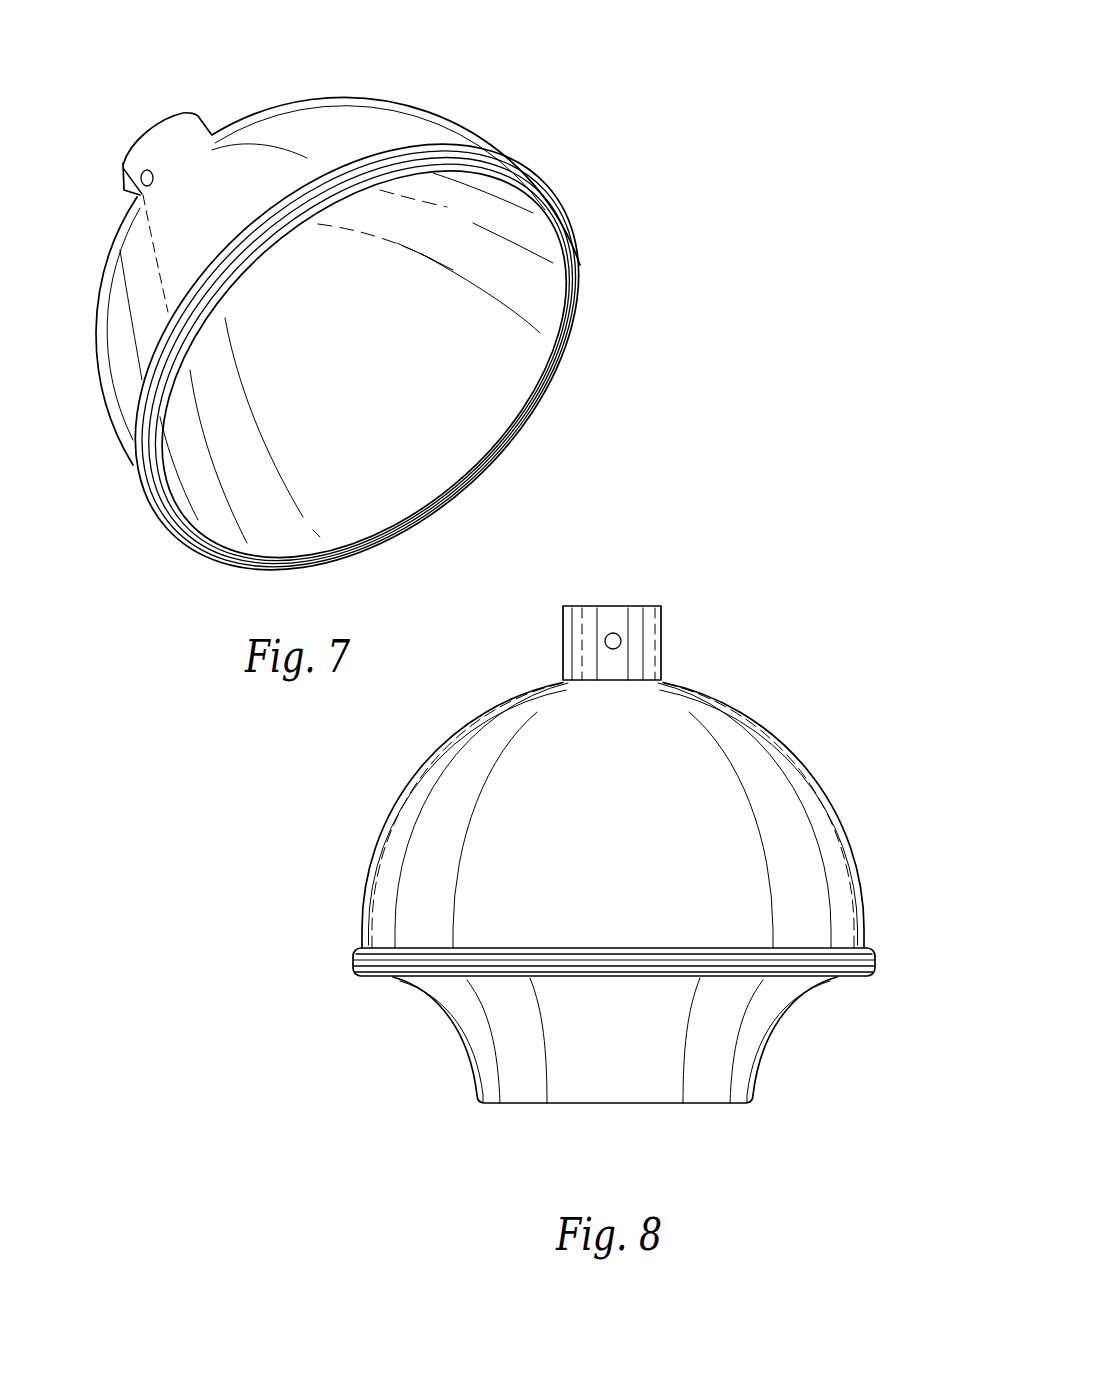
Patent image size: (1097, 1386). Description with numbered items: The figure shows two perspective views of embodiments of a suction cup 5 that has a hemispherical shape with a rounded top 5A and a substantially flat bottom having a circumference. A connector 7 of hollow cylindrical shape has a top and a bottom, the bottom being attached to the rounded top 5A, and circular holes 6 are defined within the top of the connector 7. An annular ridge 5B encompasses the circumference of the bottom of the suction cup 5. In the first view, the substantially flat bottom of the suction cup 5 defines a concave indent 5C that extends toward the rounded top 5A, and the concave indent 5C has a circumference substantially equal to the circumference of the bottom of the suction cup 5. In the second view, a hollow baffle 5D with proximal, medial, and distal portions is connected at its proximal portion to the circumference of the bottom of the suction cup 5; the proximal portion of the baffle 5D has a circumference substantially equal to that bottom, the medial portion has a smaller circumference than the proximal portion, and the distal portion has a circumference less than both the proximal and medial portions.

In FIG. 7, the suction cup 5 is at (303, 92).
In FIG. 8, the suction cup 5 is at (418, 772).
In FIG. 7, the rounded top 5A is at (178, 114).
In FIG. 7, the annular ridge 5B is at (428, 143).
In FIG. 8, the annular ridge 5B is at (845, 947).
In FIG. 7, the concave indent 5C is at (490, 390).
In FIG. 8, the hollow baffle 5D is at (456, 1027).
In FIG. 7, the circular holes 6 is at (141, 177).
In FIG. 8, the circular holes 6 is at (613, 633).
In FIG. 7, the connector 7 is at (122, 188).
In FIG. 8, the connector 7 is at (663, 638).